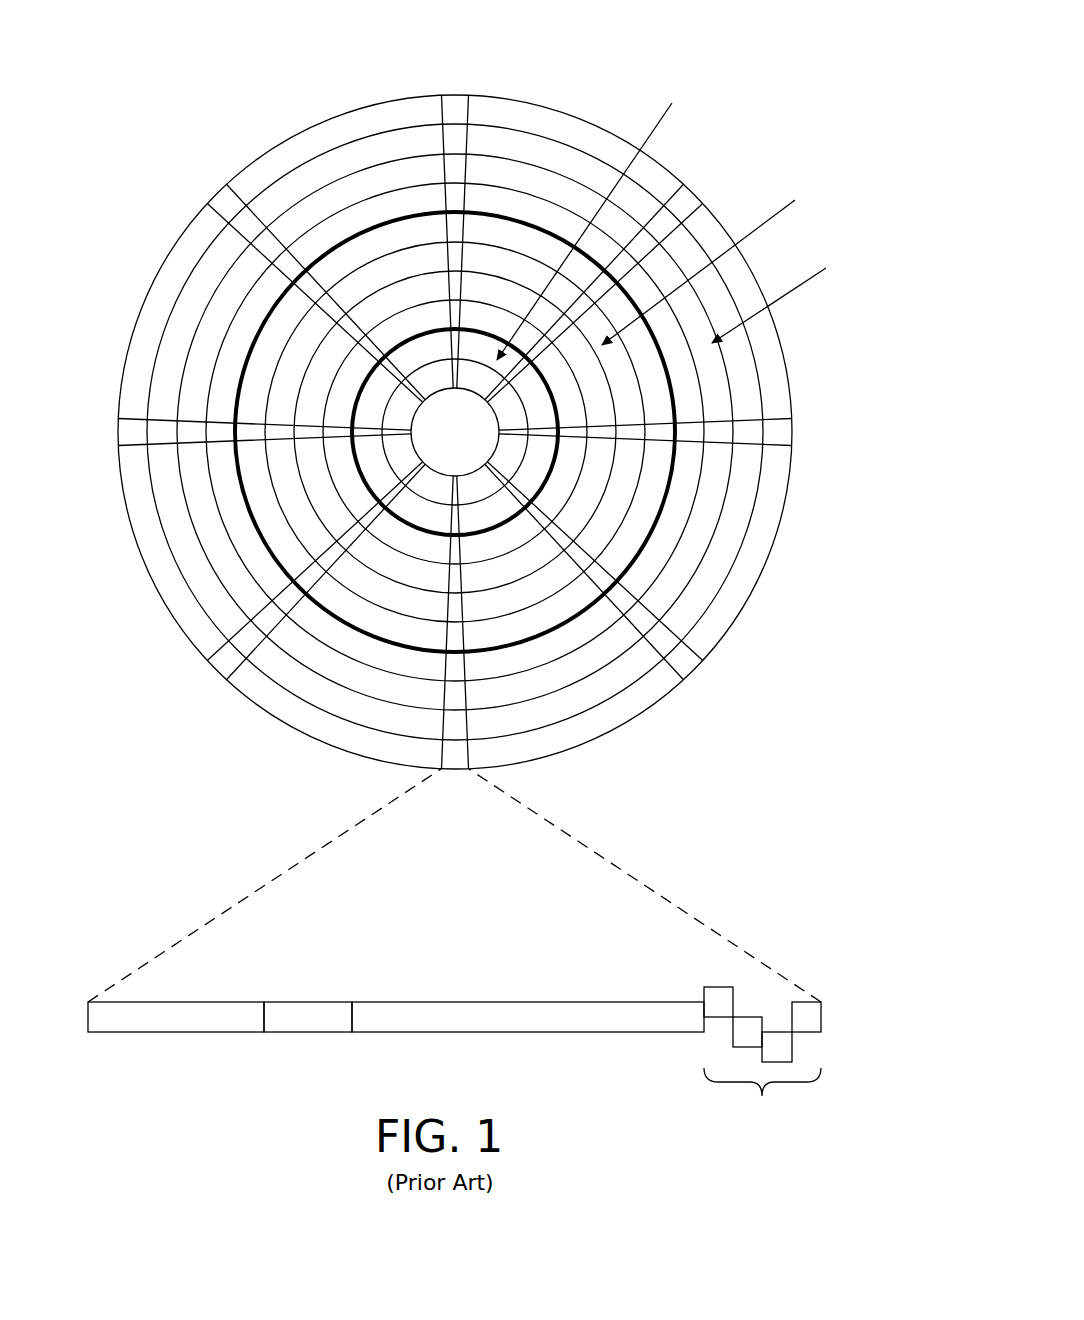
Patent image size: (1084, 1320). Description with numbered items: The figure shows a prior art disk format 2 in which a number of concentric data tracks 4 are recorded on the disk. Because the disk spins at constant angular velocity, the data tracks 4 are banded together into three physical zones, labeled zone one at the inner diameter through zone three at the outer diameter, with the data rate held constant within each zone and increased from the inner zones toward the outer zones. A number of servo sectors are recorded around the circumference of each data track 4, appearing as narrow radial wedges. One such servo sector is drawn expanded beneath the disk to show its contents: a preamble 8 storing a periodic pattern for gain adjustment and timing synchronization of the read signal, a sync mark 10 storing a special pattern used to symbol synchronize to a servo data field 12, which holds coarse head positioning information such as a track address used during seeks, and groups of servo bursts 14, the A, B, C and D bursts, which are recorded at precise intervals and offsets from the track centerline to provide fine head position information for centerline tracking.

The disk format 2 is at (485, 518).
The data tracks 4 is at (568, 162).
The preamble 8 is at (157, 1032).
The sync mark 10 is at (305, 1032).
The servo data field 12 is at (515, 1032).
The servo bursts 14 is at (692, 968).